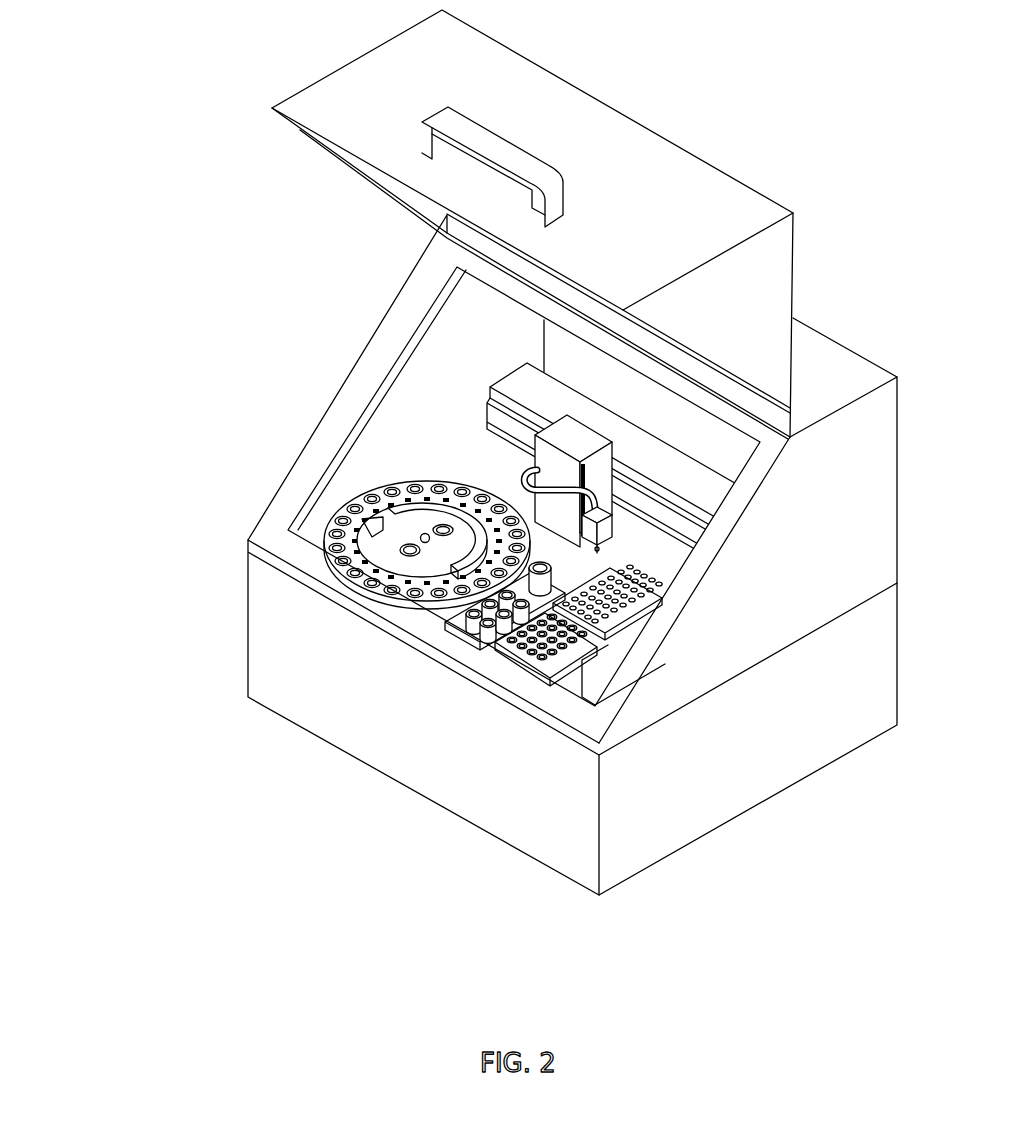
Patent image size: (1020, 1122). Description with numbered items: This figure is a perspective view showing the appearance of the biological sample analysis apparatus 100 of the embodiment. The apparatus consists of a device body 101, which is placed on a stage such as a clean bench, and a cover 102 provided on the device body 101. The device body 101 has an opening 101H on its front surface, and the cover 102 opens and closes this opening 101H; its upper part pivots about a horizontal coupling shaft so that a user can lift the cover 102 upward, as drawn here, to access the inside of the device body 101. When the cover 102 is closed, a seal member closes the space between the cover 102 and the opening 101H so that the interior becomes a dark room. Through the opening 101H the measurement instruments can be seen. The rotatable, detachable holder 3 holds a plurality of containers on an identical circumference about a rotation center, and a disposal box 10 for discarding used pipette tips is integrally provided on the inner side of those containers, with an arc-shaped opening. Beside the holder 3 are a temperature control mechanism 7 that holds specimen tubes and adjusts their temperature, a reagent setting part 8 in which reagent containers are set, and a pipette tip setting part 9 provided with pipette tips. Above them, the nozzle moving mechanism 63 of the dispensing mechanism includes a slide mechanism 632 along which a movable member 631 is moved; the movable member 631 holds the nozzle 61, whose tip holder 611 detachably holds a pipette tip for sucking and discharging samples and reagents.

The biological sample analysis apparatus 100 is at (204, 192).
The device body 101 is at (248, 625).
The opening 101H is at (437, 317).
The cover 102 is at (352, 63).
The disposal box 10 is at (342, 508).
The holder 3 is at (353, 560).
The temperature control mechanism 7 is at (500, 650).
The reagent setting part 8 is at (437, 620).
The pipette tip setting part 9 is at (600, 647).
The nozzle moving mechanism 63 is at (497, 444).
The slide mechanism 632 is at (535, 388).
The nozzle 61 is at (597, 540).
The tip holder 611 is at (573, 481).
The movable member 631 is at (613, 527).